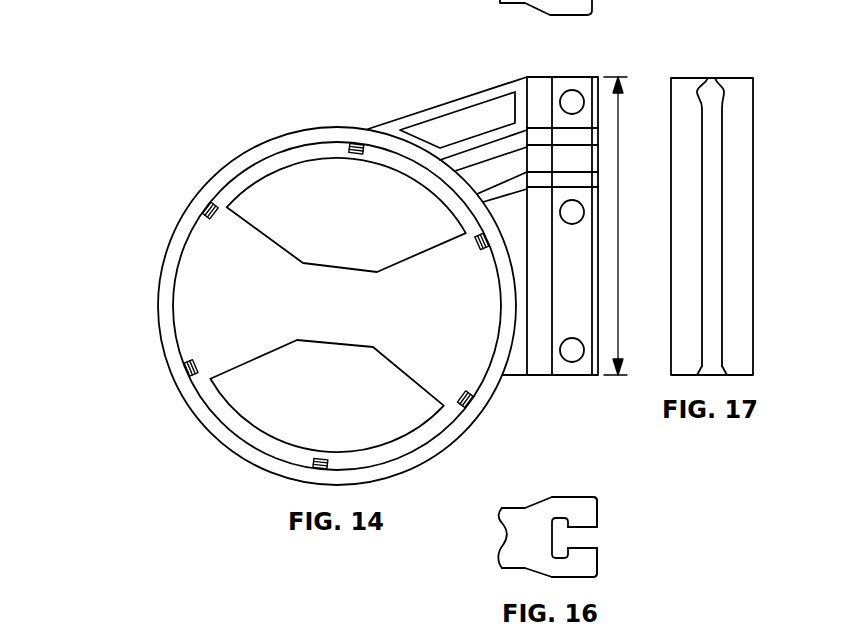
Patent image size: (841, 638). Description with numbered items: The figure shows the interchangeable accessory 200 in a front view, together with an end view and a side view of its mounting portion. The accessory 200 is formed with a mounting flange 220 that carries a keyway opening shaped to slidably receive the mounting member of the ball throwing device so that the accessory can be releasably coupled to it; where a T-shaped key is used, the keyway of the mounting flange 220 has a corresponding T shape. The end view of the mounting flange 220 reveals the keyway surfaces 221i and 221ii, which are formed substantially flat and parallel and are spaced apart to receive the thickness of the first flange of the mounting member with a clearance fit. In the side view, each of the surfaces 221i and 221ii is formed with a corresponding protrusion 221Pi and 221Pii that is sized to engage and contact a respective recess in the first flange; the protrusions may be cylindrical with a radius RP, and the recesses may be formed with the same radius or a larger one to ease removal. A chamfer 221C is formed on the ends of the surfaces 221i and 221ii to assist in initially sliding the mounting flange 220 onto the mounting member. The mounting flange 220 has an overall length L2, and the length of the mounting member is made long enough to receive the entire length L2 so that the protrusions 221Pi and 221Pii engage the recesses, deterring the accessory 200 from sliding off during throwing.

In FIG. 14, the accessory 200 is at (341, 264).
In FIG. 14, the mounting flange 220 is at (540, 100).
In FIG. 14, the length of the mounting flange L2 is at (617, 226).
In FIG. 17, the protrusion 221Pii is at (708, 78).
In FIG. 17, the protrusion 221Pi is at (715, 78).
In FIG. 17, the radius of the protrusions RP is at (722, 93).
In FIG. 17, the chamfer 221C is at (725, 371).
In FIG. 16, the surface of the keyway 221ii is at (581, 527).
In FIG. 16, the surface of the keyway 221i is at (582, 548).